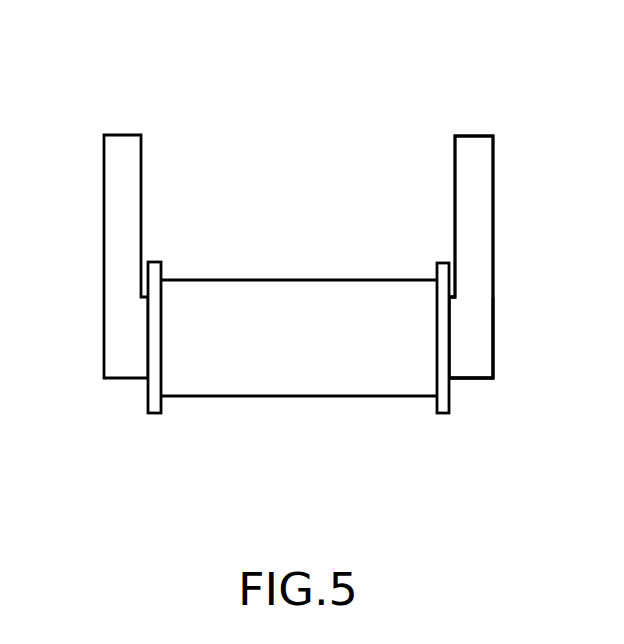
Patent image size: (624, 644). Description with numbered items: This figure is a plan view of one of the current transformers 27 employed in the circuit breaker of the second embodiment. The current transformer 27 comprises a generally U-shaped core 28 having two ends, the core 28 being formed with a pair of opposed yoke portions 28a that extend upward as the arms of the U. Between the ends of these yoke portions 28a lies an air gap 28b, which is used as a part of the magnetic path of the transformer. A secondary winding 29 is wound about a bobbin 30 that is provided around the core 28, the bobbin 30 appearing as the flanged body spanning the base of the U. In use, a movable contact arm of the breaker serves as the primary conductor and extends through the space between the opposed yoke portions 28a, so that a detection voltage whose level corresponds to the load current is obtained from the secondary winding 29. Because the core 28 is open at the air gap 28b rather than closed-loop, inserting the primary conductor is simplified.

The current transformer 27 is at (295, 247).
The core 28 is at (493, 312).
The yoke portions 28a is at (104, 181).
The air gap 28b is at (397, 212).
The secondary winding 29 is at (313, 382).
The bobbin 30 is at (449, 407).